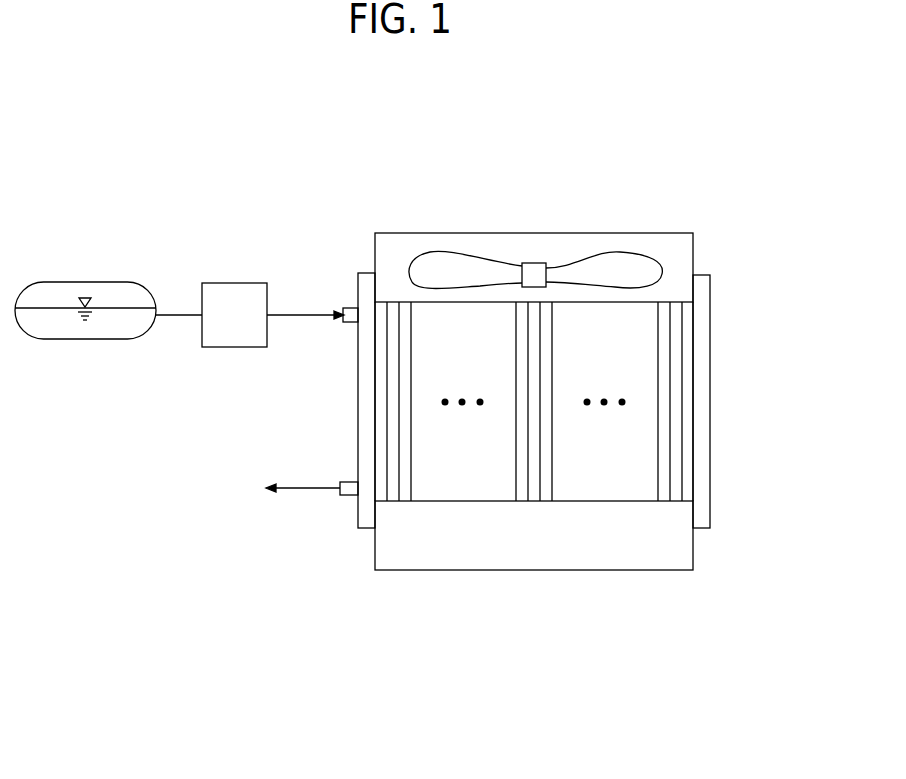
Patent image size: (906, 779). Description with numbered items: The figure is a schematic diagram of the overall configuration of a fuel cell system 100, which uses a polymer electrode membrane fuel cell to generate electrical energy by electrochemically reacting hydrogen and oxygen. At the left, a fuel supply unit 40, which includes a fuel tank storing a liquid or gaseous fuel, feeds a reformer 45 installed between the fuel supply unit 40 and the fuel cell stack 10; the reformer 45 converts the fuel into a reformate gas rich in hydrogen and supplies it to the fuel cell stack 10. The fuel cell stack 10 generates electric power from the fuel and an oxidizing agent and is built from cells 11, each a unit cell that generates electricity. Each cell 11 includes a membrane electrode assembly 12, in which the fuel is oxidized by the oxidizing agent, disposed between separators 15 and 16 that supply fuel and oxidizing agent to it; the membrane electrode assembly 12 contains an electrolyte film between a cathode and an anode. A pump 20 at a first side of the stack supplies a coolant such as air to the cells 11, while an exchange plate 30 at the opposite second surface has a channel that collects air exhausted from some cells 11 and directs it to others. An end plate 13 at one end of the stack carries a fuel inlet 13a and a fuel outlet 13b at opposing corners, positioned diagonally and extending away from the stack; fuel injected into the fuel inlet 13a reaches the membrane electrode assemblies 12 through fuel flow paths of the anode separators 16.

The fuel cell system 100 is at (378, 150).
The fuel cell stack 10 is at (719, 378).
The cell 11 is at (520, 487).
The membrane electrode assembly 12 is at (535, 493).
The end plate 13 is at (365, 403).
The fuel inlet 13a is at (347, 308).
The fuel outlet 13b is at (347, 496).
The separator 15 is at (507, 472).
The anode separator 16 is at (553, 482).
The pump 20 is at (532, 233).
The exchange plate 30 is at (625, 575).
The fuel supply unit 40 is at (107, 282).
The reformer 45 is at (234, 283).